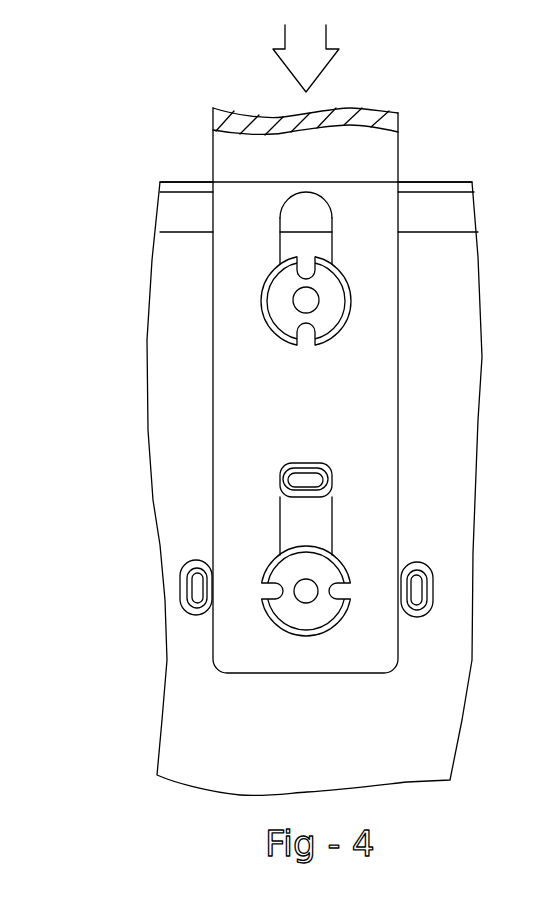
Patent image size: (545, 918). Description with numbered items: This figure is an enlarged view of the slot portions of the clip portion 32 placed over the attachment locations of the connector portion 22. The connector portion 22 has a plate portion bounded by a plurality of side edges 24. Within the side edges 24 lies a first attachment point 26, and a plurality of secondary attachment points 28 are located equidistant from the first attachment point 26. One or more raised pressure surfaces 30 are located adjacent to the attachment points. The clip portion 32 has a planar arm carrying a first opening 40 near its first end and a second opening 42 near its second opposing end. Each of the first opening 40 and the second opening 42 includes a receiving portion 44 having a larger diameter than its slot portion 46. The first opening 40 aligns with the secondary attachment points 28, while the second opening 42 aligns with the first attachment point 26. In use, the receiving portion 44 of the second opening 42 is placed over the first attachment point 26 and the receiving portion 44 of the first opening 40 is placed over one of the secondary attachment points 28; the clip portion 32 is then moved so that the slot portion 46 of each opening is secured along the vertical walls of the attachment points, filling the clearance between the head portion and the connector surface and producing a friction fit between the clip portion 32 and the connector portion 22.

The connector portion 22 is at (467, 258).
The side edges 24 is at (436, 191).
The first attachment point 26 is at (316, 610).
The secondary attachment points 28 is at (343, 307).
The raised pressure surfaces 30 is at (325, 482).
The clip portion 32 is at (204, 156).
The first opening 40 is at (278, 261).
The second opening 42 is at (278, 553).
The receiving portion 44 is at (255, 313).
The slot portion 46 is at (296, 210).